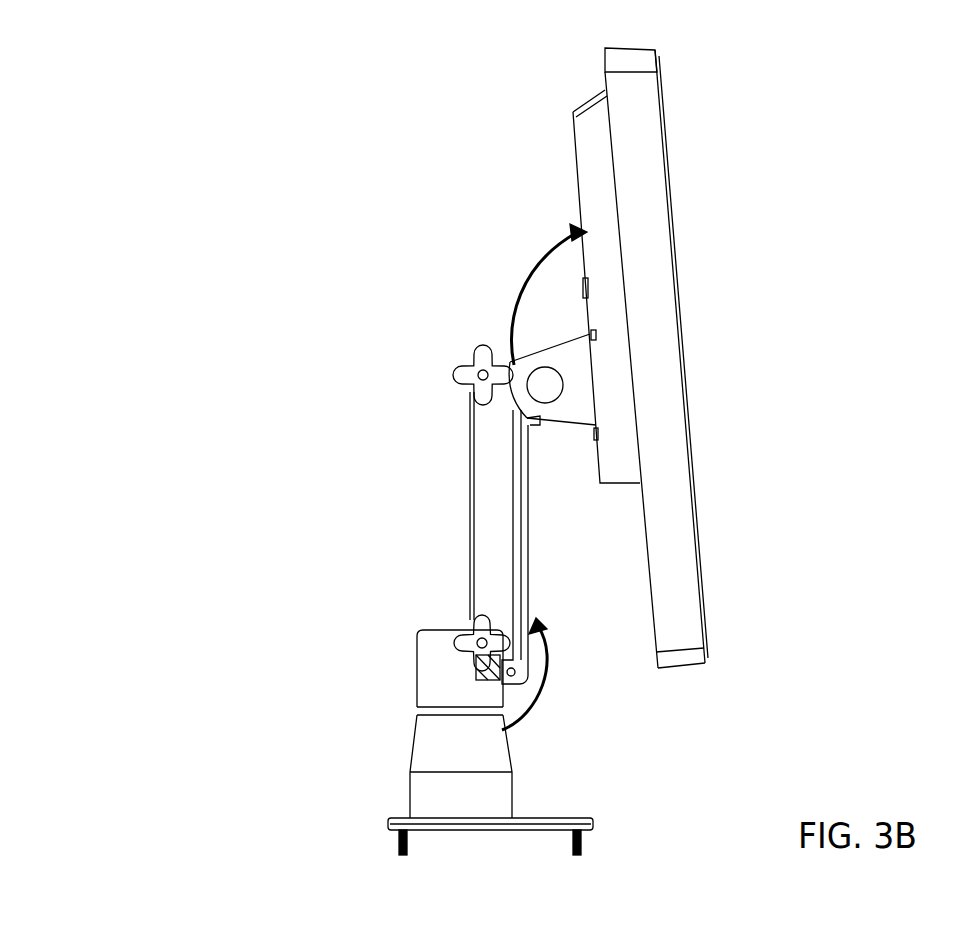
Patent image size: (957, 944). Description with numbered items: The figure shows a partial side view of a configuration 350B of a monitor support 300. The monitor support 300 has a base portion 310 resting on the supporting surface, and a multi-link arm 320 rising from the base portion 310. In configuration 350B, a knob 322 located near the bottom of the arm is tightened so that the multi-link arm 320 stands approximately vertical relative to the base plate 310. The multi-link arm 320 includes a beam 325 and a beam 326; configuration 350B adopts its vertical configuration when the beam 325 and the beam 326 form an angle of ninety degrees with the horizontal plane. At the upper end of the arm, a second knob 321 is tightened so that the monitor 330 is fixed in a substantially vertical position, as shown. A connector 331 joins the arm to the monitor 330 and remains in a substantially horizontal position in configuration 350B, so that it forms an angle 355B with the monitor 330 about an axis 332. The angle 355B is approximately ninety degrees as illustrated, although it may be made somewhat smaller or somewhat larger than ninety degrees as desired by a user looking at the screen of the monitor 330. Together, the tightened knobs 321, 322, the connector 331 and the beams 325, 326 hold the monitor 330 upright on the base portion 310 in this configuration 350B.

The monitor support 300 is at (733, 83).
The base portion 310 is at (413, 742).
The multi-link arm 320 is at (468, 500).
The knob 321 is at (472, 368).
The knob 322 is at (458, 622).
The beam 325 is at (482, 455).
The beam 326 is at (518, 540).
The monitor 330 is at (682, 320).
The connector 331 is at (505, 352).
The axis 332 is at (557, 394).
The configuration 350B is at (228, 112).
The angle 355B is at (533, 248).